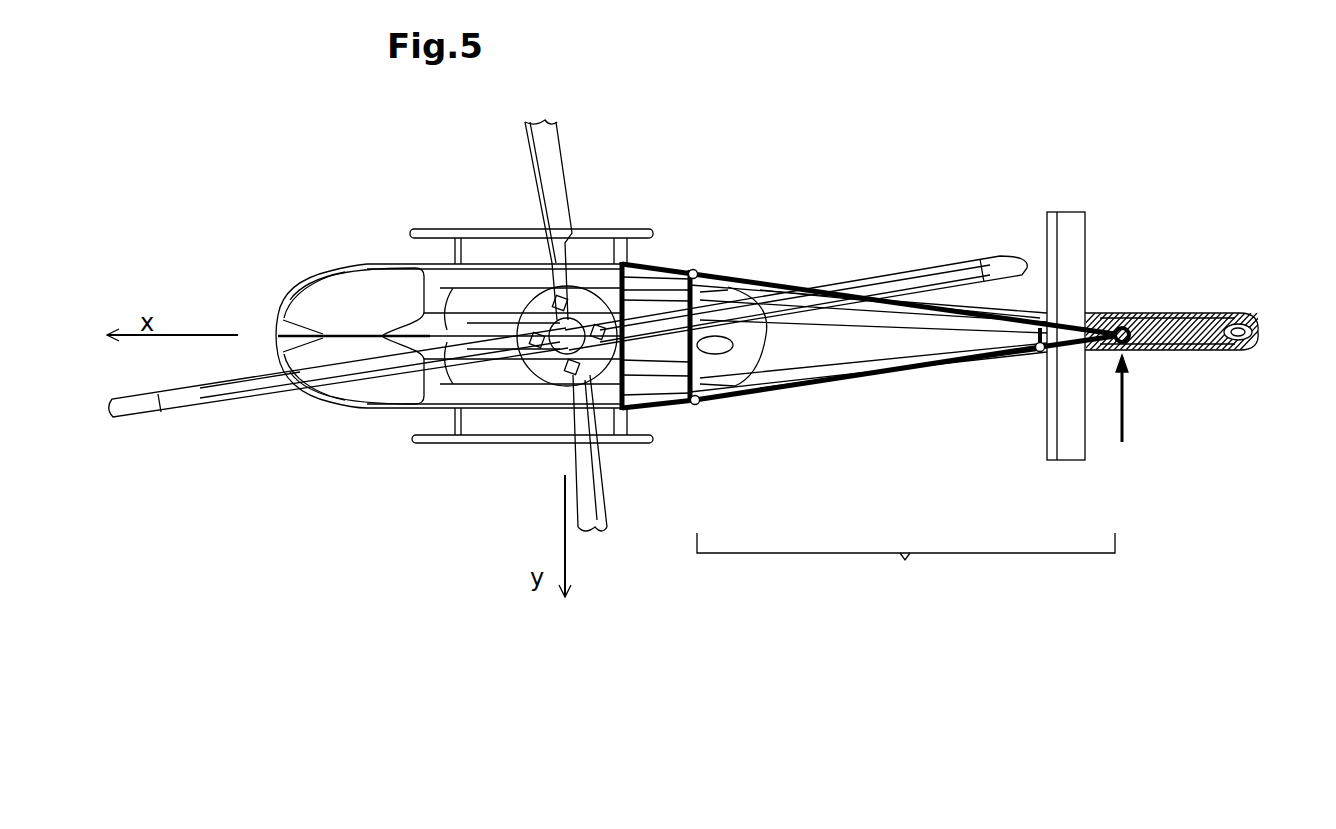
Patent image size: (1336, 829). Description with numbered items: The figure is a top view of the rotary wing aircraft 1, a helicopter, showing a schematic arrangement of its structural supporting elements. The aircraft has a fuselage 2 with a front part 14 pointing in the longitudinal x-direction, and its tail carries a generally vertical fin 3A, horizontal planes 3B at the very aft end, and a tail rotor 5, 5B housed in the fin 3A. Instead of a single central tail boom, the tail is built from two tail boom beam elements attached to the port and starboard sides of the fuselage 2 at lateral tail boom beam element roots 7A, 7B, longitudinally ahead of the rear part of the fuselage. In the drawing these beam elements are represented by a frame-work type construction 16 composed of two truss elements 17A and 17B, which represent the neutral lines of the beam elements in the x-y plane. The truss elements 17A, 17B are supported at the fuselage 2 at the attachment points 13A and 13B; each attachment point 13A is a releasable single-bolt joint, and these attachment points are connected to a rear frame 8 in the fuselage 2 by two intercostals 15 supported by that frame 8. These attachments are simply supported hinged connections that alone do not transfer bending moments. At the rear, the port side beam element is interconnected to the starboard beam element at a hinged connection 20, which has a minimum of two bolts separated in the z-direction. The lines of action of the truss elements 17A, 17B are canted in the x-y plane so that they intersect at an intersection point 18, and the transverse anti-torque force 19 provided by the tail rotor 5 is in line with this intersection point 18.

The rotary wing aircraft 1 is at (306, 165).
The fuselage 2 is at (750, 344).
The fin 3A is at (1215, 330).
The horizontal planes 3B is at (1084, 232).
The tail rotor 5 is at (1215, 357).
The tail rotor hub 5B is at (1238, 332).
The lateral tail boom beam element root 7A is at (690, 410).
The lateral tail boom beam element root 7B is at (693, 263).
The rear frame 8 is at (684, 363).
The attachment point 13A is at (698, 405).
The attachment point 13B is at (696, 268).
The front part 14 is at (272, 327).
The intercostals 15 is at (672, 270).
The frame-work type construction 16 is at (905, 568).
The truss element 17A is at (861, 377).
The truss element 17B is at (781, 280).
The intersection point 18 is at (1120, 328).
The transverse anti-torque force 19 is at (1128, 400).
The hinged connection 20 is at (1040, 360).